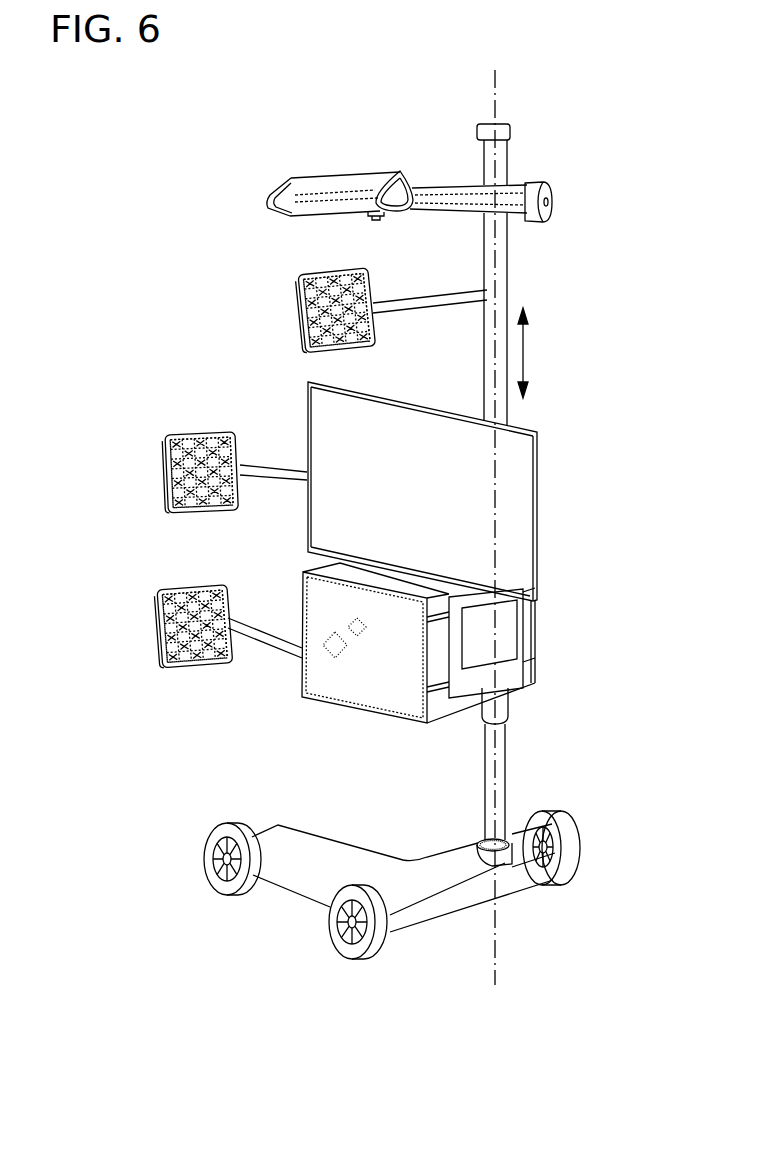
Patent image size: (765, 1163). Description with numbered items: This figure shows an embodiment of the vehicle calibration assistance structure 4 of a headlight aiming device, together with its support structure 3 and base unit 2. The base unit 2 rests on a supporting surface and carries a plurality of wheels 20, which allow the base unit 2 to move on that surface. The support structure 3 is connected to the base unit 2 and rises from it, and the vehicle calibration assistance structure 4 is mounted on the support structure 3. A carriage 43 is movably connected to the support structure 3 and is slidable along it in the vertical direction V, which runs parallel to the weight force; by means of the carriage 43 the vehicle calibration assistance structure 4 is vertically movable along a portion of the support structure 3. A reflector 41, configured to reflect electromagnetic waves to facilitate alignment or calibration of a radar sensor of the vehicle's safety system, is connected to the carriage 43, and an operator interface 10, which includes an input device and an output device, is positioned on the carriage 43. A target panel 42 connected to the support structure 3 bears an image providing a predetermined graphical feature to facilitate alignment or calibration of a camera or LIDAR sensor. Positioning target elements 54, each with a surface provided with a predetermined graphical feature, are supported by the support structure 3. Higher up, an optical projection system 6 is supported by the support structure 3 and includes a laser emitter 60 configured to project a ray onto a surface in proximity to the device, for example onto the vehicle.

The base unit 2 is at (293, 883).
The wheels 20 is at (208, 846).
The support structure 3 is at (503, 252).
The vehicle calibration assistance structure 4 is at (454, 541).
The optical projection system 6 is at (377, 171).
The laser emitter 60 is at (306, 213).
The positioning target element 54 is at (300, 297).
The target panel 42 is at (500, 525).
The reflector 41 is at (354, 700).
The operator interface 10 is at (491, 631).
The carriage 43 is at (500, 703).
The vertical direction V is at (496, 100).